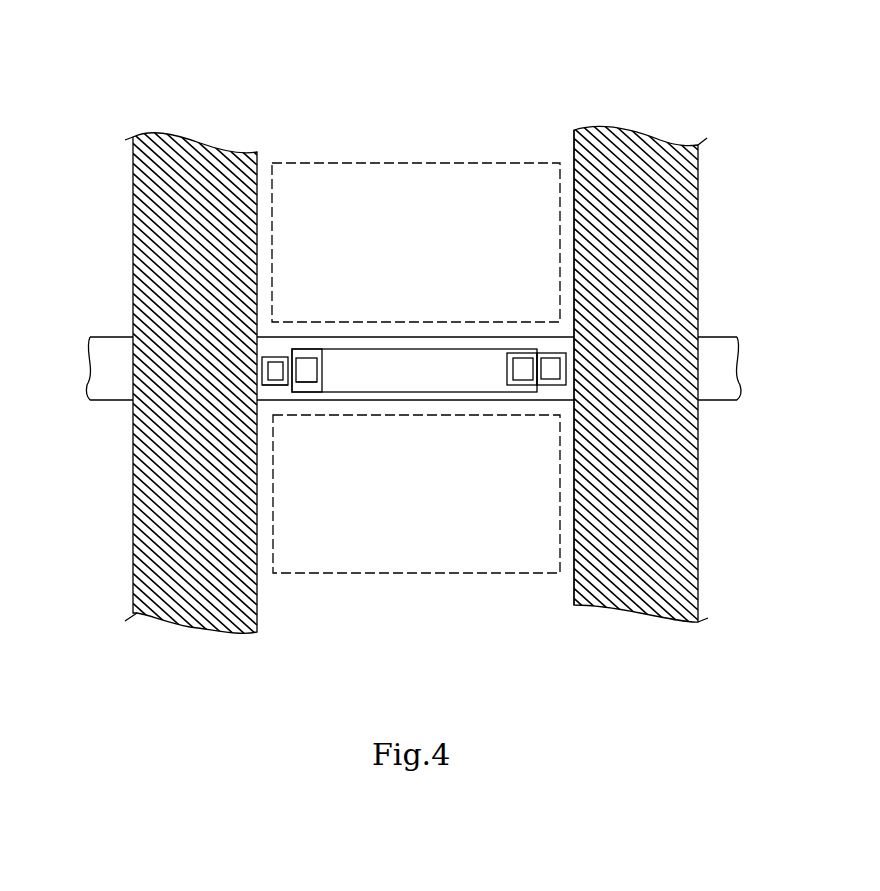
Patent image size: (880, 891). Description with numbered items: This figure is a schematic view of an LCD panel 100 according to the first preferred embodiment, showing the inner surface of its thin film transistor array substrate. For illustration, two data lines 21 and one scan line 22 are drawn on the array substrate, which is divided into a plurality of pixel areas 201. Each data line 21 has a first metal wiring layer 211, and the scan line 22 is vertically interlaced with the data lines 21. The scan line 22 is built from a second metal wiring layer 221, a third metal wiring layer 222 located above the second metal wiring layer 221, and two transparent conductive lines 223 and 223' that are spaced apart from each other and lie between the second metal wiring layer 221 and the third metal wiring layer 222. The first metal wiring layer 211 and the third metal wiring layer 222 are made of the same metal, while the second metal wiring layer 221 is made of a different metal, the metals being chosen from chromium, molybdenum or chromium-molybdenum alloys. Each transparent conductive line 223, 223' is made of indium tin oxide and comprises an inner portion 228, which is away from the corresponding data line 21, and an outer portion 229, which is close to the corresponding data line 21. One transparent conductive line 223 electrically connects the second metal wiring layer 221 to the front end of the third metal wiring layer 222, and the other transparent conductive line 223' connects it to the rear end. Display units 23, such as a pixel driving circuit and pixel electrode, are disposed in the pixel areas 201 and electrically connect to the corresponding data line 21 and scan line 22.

The LCD panel 100 is at (199, 106).
The data line 21 is at (133, 163).
The pixel area 201 is at (565, 198).
The scan line 22 is at (706, 335).
The first metal wiring layer 211 is at (130, 357).
The display unit 23 is at (314, 163).
The second metal wiring layer 221 is at (352, 400).
The third metal wiring layer 222 is at (485, 400).
The transparent conductive line 223 is at (167, 267).
The transparent conductive line 223' is at (663, 285).
The inner portion 228 is at (307, 390).
The outer portion 229 is at (270, 387).